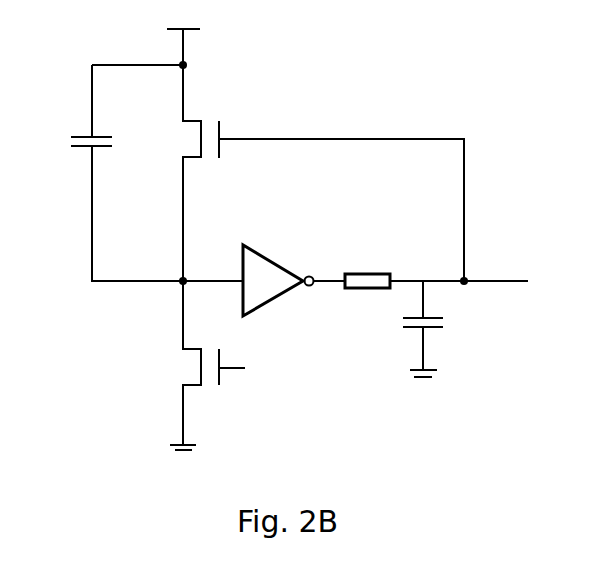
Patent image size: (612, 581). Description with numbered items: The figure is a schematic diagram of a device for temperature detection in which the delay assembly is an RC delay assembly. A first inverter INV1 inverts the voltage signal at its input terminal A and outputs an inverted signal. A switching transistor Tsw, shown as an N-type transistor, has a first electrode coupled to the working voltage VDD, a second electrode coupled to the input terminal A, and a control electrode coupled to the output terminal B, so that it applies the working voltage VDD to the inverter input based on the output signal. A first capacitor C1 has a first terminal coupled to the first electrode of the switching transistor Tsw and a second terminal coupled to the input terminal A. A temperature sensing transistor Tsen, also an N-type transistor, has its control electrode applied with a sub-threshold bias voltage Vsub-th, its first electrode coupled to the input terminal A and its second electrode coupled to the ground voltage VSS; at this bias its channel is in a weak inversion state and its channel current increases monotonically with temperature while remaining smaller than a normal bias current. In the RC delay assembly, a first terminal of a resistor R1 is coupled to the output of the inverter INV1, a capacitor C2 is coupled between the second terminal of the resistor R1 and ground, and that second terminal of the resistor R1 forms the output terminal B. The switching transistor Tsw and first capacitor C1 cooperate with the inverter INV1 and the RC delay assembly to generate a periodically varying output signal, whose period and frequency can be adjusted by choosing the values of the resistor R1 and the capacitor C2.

The working voltage VDD is at (185, 36).
The first capacitor C1 is at (116, 173).
The switching transistor Tsw is at (313, 171).
The input terminal A is at (175, 271).
The first inverter INV1 is at (264, 267).
The resistor R1 is at (436, 269).
The capacitor C2 is at (437, 329).
The output terminal B is at (472, 272).
The temperature sensing transistor Tsen is at (200, 363).
The sub-threshold bias voltage Vsub-th is at (274, 367).
The ground voltage VSS is at (184, 461).